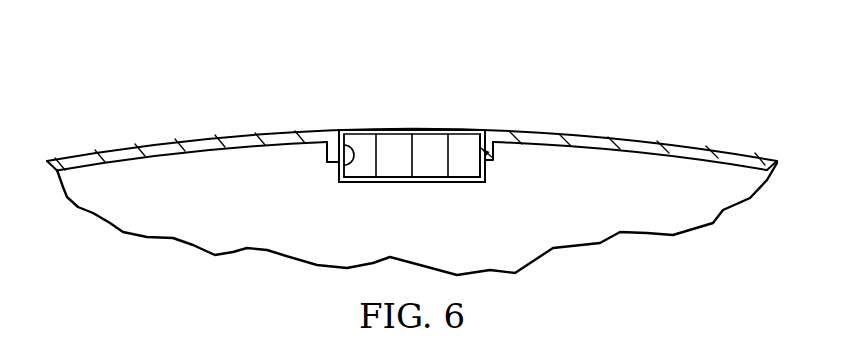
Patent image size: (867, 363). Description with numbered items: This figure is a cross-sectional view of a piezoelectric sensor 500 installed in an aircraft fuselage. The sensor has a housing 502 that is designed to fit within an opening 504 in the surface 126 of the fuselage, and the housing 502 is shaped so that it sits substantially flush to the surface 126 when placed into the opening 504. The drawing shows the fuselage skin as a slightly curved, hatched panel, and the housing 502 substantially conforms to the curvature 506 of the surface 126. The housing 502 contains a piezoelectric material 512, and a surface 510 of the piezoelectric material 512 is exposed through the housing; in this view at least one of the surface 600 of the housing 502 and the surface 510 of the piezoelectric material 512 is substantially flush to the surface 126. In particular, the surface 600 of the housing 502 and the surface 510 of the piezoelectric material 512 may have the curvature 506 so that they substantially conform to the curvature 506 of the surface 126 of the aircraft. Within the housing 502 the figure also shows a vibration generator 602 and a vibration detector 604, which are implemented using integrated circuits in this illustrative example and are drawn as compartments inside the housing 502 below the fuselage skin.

The surface 126 is at (685, 146).
The piezoelectric sensor 500 is at (389, 86).
The housing 502 is at (473, 183).
The opening 504 is at (339, 168).
The curvature 506 is at (229, 130).
The surface 510 is at (418, 130).
The piezoelectric material 512 is at (472, 130).
The surface 600 is at (360, 130).
The vibration generator 602 is at (382, 174).
The vibration detector 604 is at (433, 173).